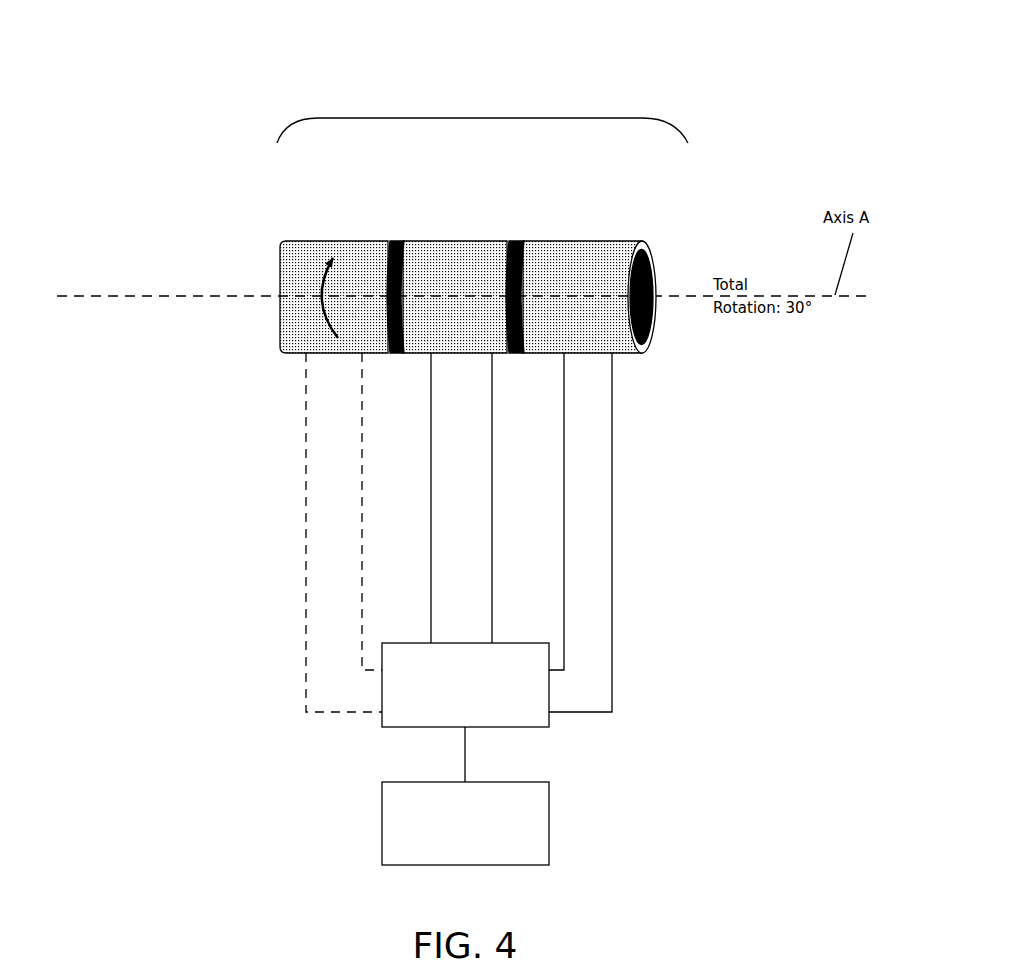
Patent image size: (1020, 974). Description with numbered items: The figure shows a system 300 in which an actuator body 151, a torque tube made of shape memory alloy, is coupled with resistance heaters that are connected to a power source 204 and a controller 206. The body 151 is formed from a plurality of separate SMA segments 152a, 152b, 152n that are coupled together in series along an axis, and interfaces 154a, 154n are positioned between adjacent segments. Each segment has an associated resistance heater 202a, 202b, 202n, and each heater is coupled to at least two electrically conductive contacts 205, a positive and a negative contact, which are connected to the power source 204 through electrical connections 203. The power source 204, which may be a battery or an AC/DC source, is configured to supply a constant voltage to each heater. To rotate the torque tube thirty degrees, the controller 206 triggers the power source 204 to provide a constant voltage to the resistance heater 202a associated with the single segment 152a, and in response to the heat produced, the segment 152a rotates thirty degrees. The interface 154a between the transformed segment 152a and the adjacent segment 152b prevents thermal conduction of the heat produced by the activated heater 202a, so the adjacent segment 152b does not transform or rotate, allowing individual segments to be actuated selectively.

The system 300 is at (488, 48).
The body 151 is at (482, 118).
The segment 152a is at (368, 192).
The segment 152b is at (482, 192).
The segment 152n is at (600, 192).
The resistance heater 202a is at (315, 248).
The resistance heater 202b is at (462, 245).
The resistance heater 202n is at (588, 246).
The interface 154a is at (401, 241).
The interface 154n is at (521, 241).
The electrically conductive contacts 205 is at (265, 386).
The electrical connections 203 is at (281, 548).
The power source 204 is at (465, 685).
The controller 206 is at (465, 823).